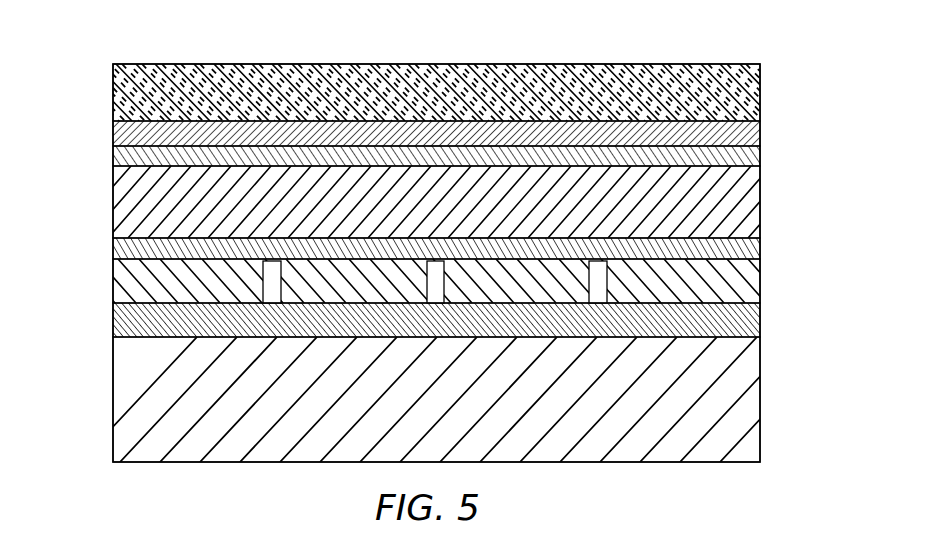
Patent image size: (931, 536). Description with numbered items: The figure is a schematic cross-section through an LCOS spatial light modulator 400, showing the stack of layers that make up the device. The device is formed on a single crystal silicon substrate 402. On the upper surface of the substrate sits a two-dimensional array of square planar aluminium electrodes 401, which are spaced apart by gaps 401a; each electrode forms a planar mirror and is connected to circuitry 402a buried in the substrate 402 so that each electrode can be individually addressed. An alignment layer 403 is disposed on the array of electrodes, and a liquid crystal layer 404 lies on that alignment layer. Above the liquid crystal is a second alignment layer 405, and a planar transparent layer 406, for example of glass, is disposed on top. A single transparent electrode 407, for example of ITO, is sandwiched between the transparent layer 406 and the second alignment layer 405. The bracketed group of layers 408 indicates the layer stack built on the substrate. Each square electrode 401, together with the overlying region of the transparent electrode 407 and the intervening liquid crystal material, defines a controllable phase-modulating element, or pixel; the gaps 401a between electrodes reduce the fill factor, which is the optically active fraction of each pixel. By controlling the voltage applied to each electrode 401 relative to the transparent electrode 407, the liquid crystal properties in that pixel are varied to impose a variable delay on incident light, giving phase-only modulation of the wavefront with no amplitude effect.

The semiconductor device 400 is at (714, 52).
The square planar aluminium electrode 401 is at (451, 384).
The gap 401a is at (599, 292).
The single crystal silicon substrate 402 is at (112, 396).
The circuitry 402a is at (112, 318).
The alignment layer 403 is at (760, 246).
The liquid crystal layer 404 is at (760, 200).
The second alignment layer 405 is at (760, 153).
The planar transparent layer 406 is at (760, 91).
The transparent electrode 407 is at (760, 132).
The layer stack 408 is at (102, 63).